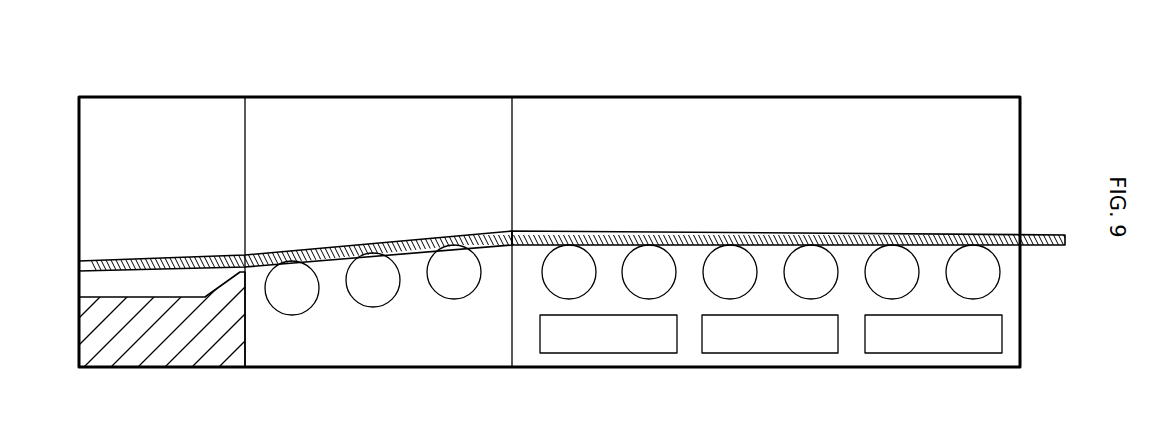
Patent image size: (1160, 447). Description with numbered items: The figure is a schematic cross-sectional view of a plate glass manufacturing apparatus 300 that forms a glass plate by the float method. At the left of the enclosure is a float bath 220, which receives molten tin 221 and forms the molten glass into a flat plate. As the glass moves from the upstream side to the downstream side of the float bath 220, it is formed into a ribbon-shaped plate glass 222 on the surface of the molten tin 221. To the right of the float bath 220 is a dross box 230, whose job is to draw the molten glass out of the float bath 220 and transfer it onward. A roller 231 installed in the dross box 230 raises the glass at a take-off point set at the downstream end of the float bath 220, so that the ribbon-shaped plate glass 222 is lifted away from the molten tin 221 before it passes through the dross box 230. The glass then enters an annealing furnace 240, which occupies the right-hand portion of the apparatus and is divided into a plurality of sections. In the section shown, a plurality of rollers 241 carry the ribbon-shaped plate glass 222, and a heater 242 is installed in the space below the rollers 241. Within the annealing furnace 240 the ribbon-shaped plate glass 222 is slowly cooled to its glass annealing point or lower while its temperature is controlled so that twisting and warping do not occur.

The plate glass manufacturing apparatus 300 is at (952, 56).
The float bath 220 is at (145, 362).
The molten tin 221 is at (85, 283).
The ribbon-shaped plate glass 222 is at (1051, 235).
The dross box 230 is at (378, 251).
The roller 231 is at (292, 305).
The annealing furnace 240 is at (763, 251).
The rollers 241 is at (550, 274).
The heater 242 is at (605, 342).